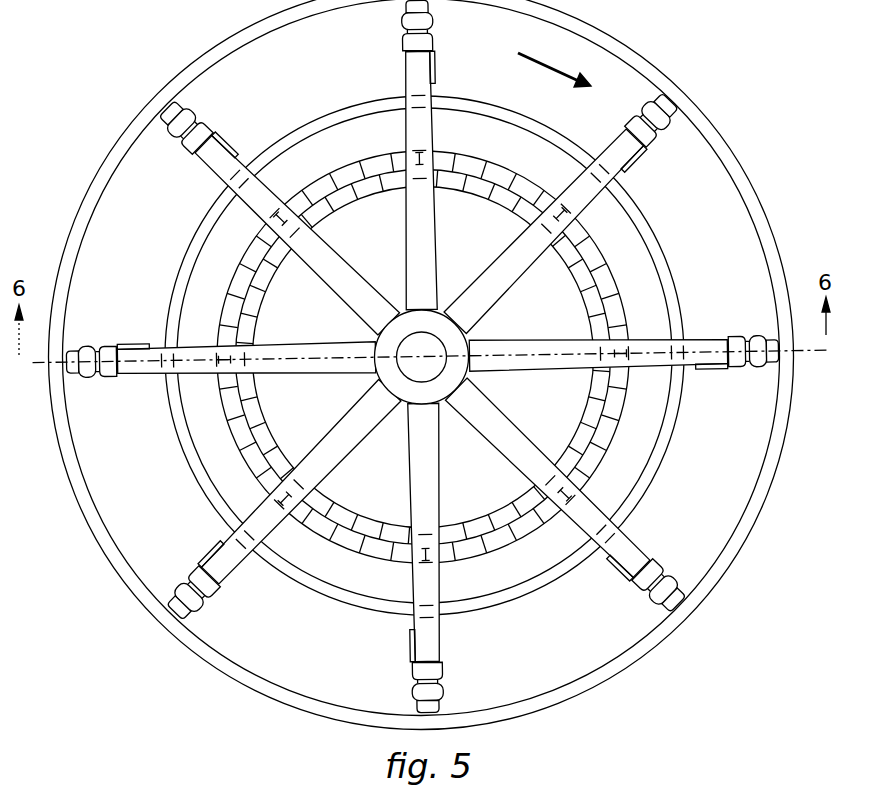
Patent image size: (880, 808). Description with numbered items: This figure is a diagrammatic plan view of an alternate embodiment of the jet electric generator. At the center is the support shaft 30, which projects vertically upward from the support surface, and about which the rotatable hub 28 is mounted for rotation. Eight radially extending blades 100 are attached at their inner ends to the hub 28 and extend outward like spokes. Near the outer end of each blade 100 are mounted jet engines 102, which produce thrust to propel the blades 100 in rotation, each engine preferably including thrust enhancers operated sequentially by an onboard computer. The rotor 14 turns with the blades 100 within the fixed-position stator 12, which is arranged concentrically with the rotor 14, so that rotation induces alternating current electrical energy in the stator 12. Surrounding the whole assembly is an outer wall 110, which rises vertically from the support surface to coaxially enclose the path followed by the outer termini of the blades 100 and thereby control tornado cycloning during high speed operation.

The stator 12 is at (605, 432).
The rotor 14 is at (593, 412).
The rotatable hub 28 is at (440, 392).
The support shaft 30 is at (440, 348).
The radially extending blade 100 is at (343, 452).
The upper jet engine 102 is at (108, 373).
The outer wall 110 is at (667, 632).